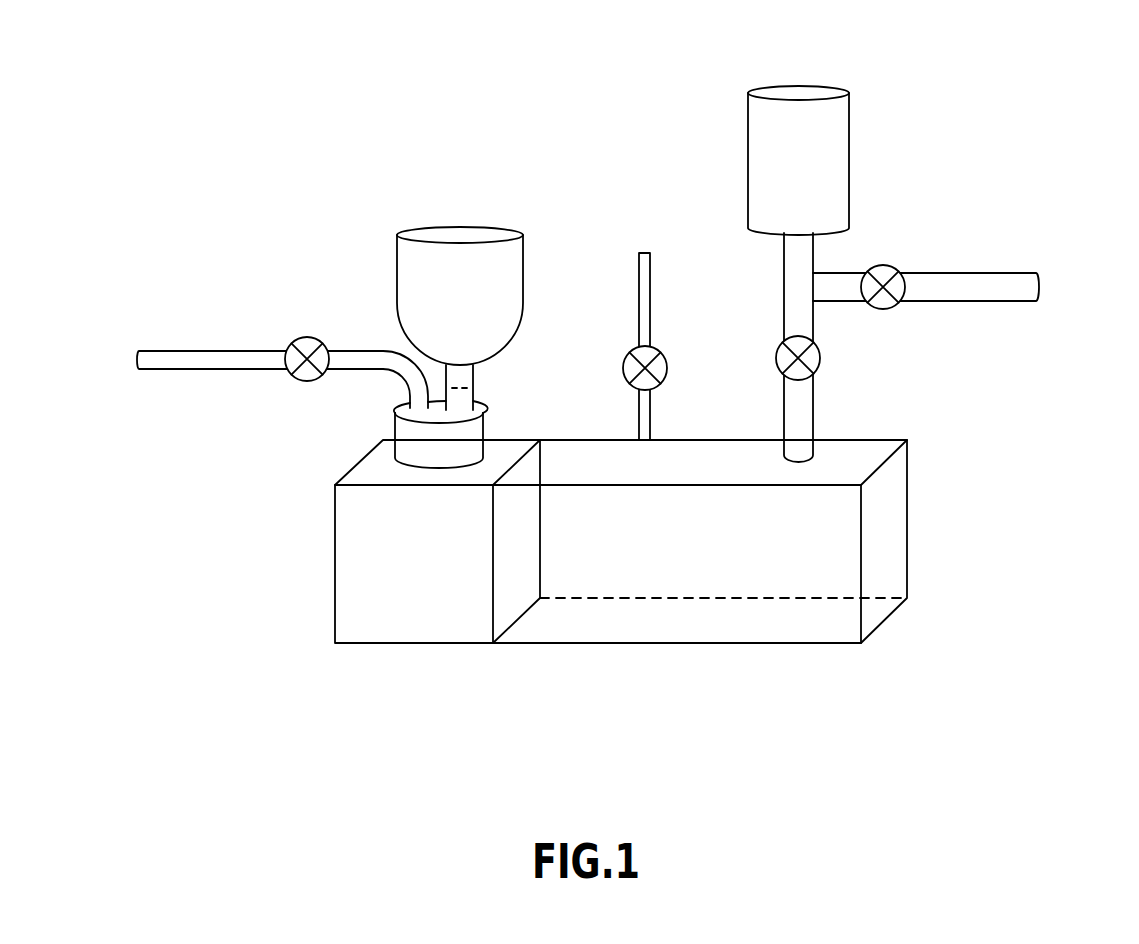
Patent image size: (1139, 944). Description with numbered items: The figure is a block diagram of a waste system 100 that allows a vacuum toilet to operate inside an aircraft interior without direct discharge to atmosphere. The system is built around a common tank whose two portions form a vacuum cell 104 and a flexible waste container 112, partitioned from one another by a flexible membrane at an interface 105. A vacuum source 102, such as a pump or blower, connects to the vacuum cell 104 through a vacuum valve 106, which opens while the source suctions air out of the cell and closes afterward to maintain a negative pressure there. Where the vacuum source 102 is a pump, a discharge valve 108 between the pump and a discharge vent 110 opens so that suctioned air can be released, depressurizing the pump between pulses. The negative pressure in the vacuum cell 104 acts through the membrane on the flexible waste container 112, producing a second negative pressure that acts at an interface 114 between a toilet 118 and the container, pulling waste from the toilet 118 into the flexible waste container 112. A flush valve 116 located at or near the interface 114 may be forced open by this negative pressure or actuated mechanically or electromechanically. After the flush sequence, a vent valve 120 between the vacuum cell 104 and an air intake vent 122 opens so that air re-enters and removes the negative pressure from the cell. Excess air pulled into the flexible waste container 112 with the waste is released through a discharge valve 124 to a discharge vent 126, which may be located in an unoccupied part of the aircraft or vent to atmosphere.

The waste system 100 is at (240, 103).
The vacuum source 102 is at (798, 95).
The vacuum cell 104 is at (883, 537).
The interface 105 is at (503, 608).
The vacuum valve 106 is at (820, 360).
The discharge valve 108 is at (883, 265).
The discharge vent 110 is at (1038, 285).
The flexible waste container 112 is at (352, 562).
The interface 114 is at (397, 428).
The flush valve 116 is at (473, 397).
The toilet 118 is at (460, 232).
The vent valve 120 is at (650, 350).
The air intake vent 122 is at (645, 252).
The discharge valve 124 is at (307, 337).
The discharge vent 126 is at (138, 358).